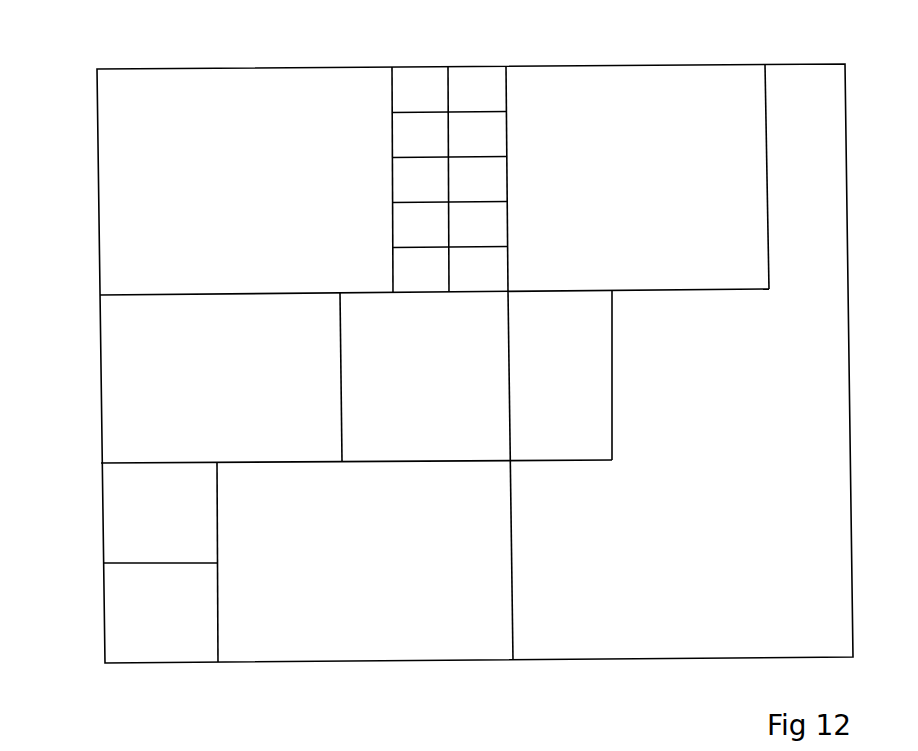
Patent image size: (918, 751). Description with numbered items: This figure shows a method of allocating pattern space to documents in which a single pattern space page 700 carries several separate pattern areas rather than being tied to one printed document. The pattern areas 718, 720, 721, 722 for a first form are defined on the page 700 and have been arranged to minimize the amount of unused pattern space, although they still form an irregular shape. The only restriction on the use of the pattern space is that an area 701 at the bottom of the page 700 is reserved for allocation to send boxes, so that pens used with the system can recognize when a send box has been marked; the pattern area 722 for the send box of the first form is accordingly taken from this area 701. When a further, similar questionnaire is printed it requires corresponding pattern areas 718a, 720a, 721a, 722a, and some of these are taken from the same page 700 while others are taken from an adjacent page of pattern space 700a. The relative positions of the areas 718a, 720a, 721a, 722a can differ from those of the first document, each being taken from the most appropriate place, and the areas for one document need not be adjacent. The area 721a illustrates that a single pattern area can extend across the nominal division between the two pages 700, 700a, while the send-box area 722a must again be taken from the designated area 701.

The pattern space page 700 is at (310, 662).
The adjacent page of pattern space 700a is at (683, 657).
The reserved area 701 is at (360, 577).
The pattern space area 718 is at (392, 92).
The pattern area for second document instance 718a is at (507, 88).
The pattern space area 720 is at (247, 68).
The pattern area for second document instance 720a is at (633, 65).
The pattern space area 721 is at (99, 380).
The pattern area for second document instance 721a is at (475, 460).
The pattern space area for send box 722 is at (102, 513).
The pattern space for send box of second document 722a is at (103, 617).